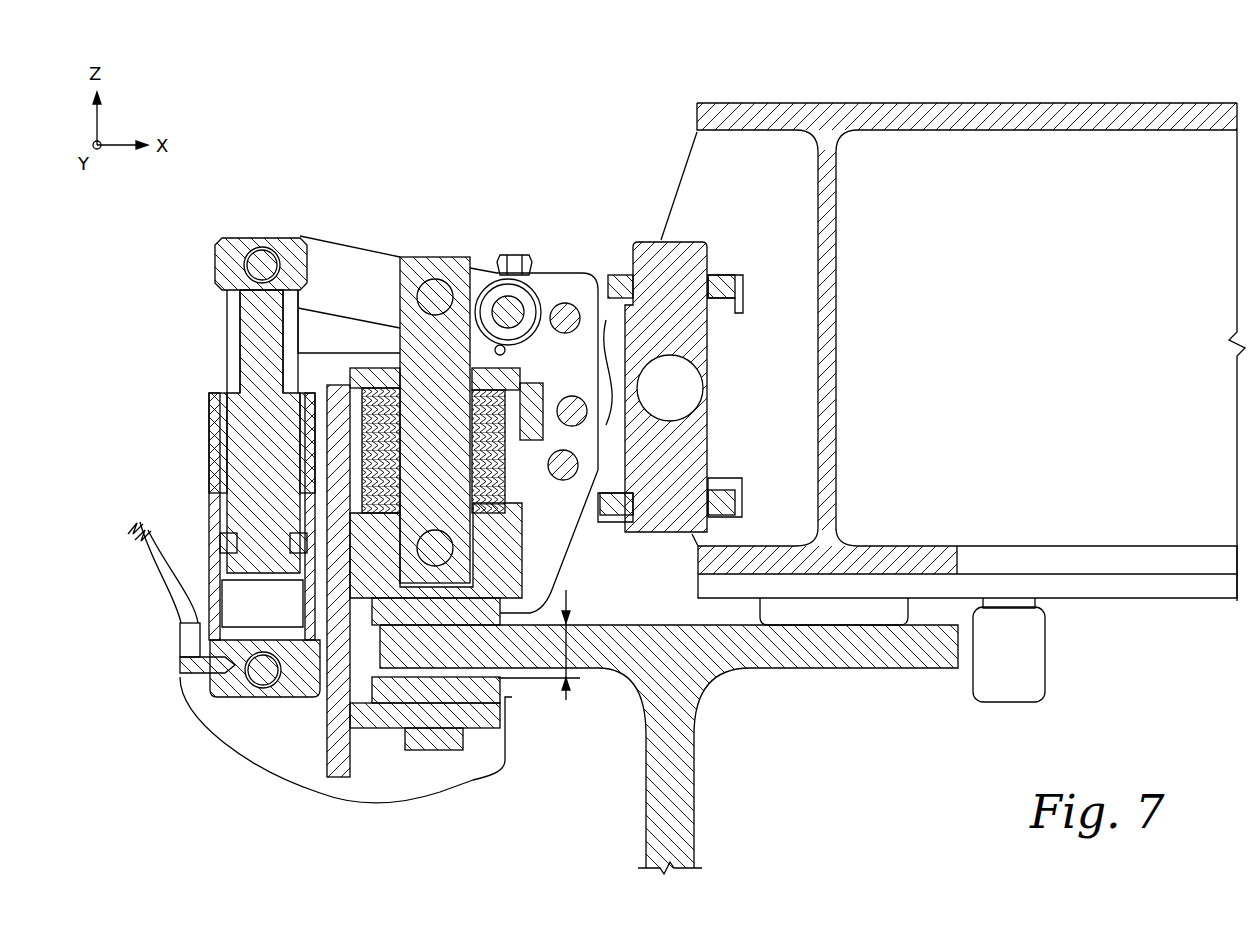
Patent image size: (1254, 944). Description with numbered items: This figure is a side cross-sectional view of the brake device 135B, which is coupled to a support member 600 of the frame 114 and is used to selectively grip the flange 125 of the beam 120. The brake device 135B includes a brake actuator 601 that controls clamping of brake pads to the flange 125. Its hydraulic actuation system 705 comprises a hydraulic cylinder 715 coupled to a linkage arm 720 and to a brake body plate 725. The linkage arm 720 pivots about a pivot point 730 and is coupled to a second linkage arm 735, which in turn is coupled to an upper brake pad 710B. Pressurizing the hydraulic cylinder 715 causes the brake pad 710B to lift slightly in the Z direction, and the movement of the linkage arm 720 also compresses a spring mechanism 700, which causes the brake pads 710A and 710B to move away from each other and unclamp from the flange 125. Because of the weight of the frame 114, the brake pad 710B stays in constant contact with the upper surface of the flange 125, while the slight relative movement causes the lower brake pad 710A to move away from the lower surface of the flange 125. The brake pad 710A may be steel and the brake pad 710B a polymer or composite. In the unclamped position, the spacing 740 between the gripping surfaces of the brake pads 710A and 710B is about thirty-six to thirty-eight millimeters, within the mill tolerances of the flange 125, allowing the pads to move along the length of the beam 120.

The frame 114 is at (908, 101).
The support member 600 is at (817, 190).
The brake actuator 601 is at (191, 353).
The spring mechanism 700 is at (389, 348).
The hydraulic actuation system 705 is at (204, 261).
The hydraulic cylinder 715 is at (236, 452).
The linkage arm 720 is at (350, 254).
The brake body plate 725 is at (288, 770).
The pivot point 730 is at (523, 343).
The linkage arm 735 is at (435, 258).
The spacing 740 is at (568, 646).
The brake pad 710A is at (478, 700).
The brake pad 710B is at (483, 607).
The flange 125 is at (855, 670).
The beam 120 is at (695, 833).
The brake device 135B is at (192, 756).